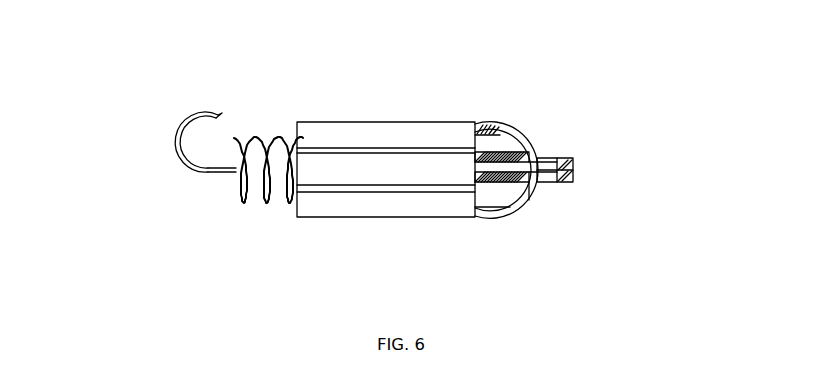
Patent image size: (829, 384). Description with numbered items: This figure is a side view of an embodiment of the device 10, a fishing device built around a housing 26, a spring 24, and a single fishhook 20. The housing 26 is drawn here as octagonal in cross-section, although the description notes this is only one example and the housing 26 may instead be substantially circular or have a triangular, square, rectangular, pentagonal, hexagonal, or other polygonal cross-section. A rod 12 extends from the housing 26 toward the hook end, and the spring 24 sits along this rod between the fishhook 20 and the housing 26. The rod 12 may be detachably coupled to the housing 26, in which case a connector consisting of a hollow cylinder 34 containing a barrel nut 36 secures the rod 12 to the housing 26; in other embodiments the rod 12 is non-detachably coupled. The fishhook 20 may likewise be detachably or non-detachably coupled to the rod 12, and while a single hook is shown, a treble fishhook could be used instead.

The device 10 is at (618, 152).
The rod 12 is at (190, 167).
The fishhook 20 is at (175, 140).
The spring 24 is at (265, 137).
The housing 26 is at (392, 120).
The hollow cylinder 34 is at (500, 192).
The barrel nut 36 is at (479, 131).